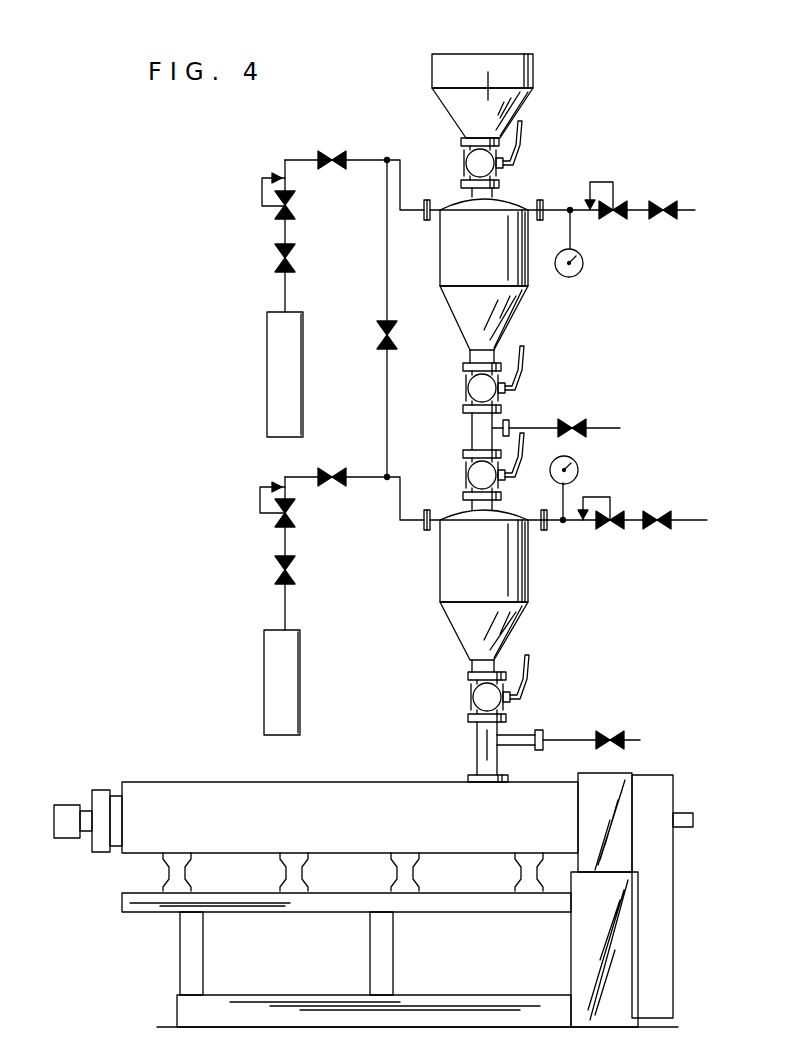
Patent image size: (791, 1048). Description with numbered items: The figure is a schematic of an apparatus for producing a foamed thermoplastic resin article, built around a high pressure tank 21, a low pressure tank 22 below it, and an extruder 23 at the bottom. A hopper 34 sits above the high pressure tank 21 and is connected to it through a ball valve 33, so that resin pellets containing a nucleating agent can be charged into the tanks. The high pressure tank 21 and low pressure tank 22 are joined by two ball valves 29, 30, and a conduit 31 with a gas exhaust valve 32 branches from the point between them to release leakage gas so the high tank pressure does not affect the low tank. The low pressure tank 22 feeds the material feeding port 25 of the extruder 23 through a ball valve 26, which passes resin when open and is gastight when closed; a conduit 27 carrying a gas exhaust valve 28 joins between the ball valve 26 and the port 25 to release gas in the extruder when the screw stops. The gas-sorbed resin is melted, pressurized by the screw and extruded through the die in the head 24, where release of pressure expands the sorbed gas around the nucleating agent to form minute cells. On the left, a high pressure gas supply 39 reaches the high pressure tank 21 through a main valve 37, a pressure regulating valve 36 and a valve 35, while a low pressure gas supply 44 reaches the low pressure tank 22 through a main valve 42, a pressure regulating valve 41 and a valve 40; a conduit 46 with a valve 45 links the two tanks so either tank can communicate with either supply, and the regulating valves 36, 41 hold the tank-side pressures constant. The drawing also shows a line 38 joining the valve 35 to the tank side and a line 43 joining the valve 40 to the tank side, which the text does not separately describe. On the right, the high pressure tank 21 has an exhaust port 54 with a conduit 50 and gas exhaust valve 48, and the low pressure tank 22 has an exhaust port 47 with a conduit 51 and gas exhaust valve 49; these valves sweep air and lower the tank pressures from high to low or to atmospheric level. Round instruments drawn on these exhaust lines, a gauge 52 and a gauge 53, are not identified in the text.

The high pressure tank 21 is at (484, 269).
The low pressure tank 22 is at (484, 580).
The extruder 23 is at (407, 900).
The head 24 is at (76, 805).
The material feeding port 25 is at (472, 775).
The ball valve 26 is at (472, 698).
The conduit 27 is at (553, 740).
The gas exhaust valve 28 is at (610, 730).
The ball valve 29 is at (468, 388).
The ball valve 30 is at (468, 476).
The conduit 31 is at (545, 412).
The gas exhaust valve 32 is at (576, 414).
The ball valve 33 is at (466, 162).
The hopper 34 is at (462, 54).
The valve 35 is at (332, 151).
The pressure regulating valve 36 is at (297, 208).
The main valve 37 is at (297, 260).
The gas supply line 38 is at (366, 160).
The high pressure gas supply 39 is at (285, 374).
The valve 40 is at (332, 470).
The pressure regulating valve 41 is at (292, 516).
The main valve 42 is at (292, 572).
The gas supply line 43 is at (365, 477).
The low pressure gas supply 44 is at (282, 682).
The valve 45 is at (377, 336).
The conduit 46 is at (387, 276).
The exhaust port 47 is at (546, 530).
The gas exhaust valve 48 is at (662, 220).
The gas exhaust valve 49 is at (656, 530).
The conduit 50 is at (570, 205).
The conduit 51 is at (580, 530).
The pressure gauge 52 is at (583, 263).
The pressure gauge 53 is at (578, 470).
The exhaust port 54 is at (540, 200).